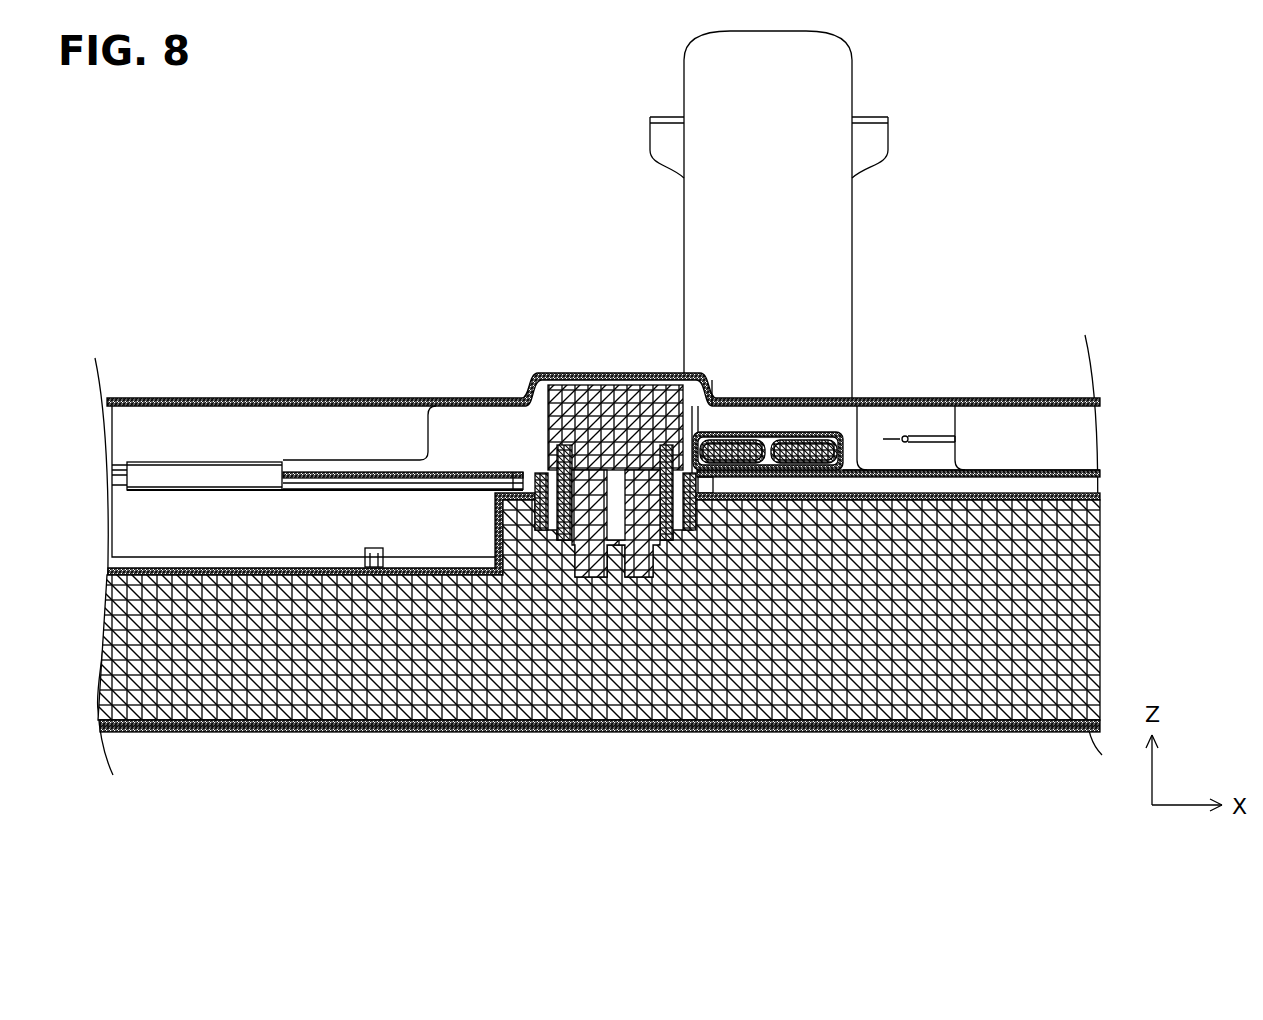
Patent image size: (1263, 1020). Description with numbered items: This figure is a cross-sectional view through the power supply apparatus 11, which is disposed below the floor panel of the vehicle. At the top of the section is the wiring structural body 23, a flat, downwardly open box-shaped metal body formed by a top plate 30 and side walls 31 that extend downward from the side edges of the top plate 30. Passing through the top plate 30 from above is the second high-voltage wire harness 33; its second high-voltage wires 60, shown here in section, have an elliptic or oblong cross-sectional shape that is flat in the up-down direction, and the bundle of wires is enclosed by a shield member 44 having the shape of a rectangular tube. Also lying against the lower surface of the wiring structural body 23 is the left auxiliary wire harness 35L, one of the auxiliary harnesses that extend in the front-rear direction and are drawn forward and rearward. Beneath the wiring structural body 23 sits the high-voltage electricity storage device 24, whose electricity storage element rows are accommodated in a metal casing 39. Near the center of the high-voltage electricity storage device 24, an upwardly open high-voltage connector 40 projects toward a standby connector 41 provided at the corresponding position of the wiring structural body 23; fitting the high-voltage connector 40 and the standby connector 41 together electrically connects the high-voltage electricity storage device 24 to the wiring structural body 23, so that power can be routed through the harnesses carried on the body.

The power supply apparatus 11 is at (104, 312).
The second high-voltage wire harness 33 is at (828, 79).
The shield member 44 is at (741, 434).
The second high-voltage wires 60 is at (750, 443).
The wiring structural body 23 is at (1070, 314).
The top plate 30 is at (1001, 400).
The side walls 31 is at (1053, 434).
The left auxiliary wire harness 35L is at (925, 437).
The standby connector 41 is at (590, 405).
The high-voltage connector 40 is at (652, 487).
The high-voltage electricity storage device 24 is at (566, 690).
The metal casing 39 is at (652, 732).